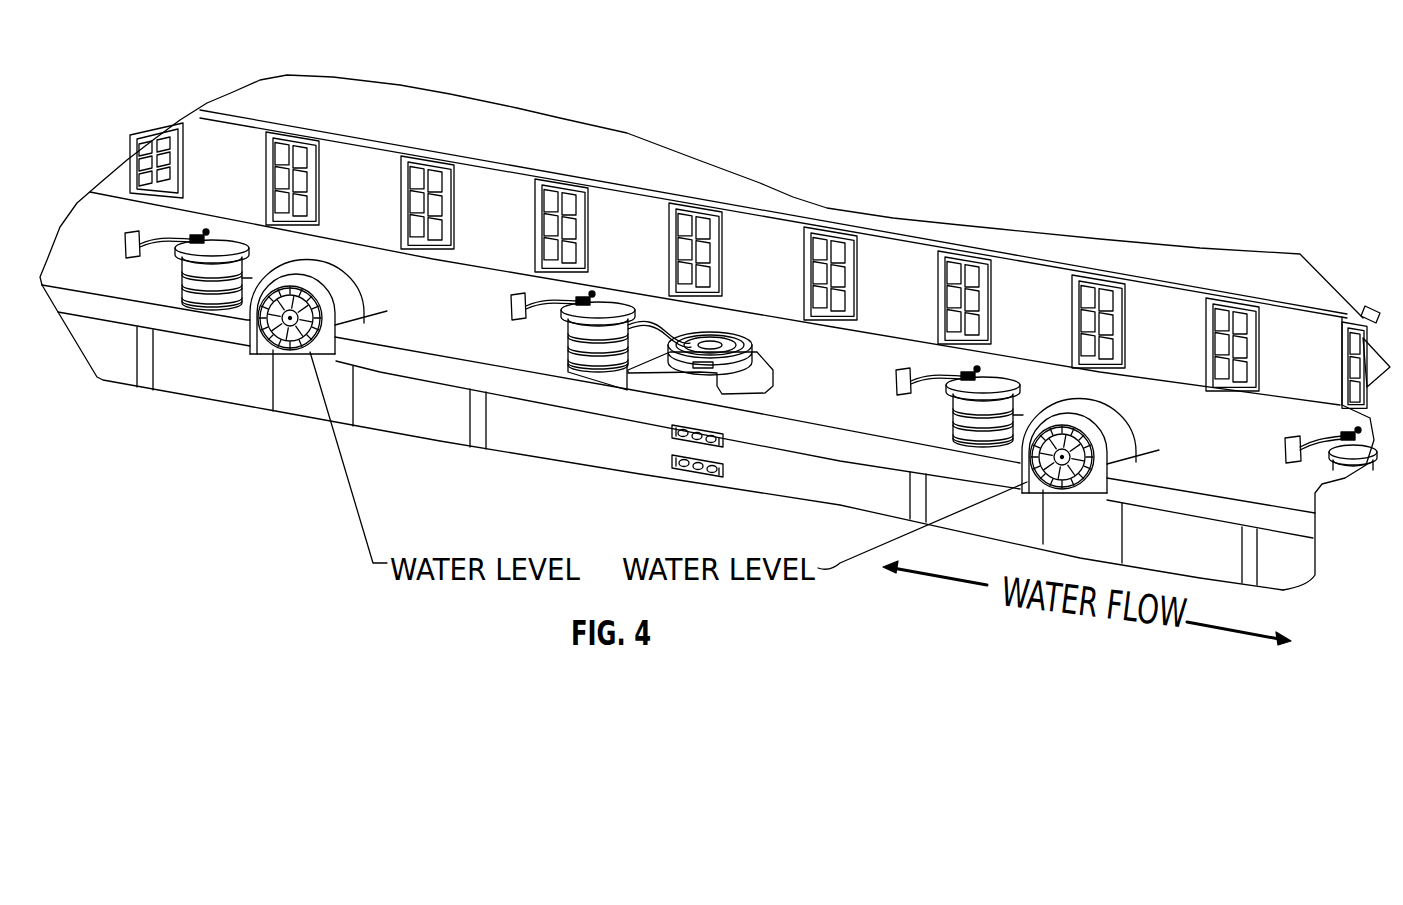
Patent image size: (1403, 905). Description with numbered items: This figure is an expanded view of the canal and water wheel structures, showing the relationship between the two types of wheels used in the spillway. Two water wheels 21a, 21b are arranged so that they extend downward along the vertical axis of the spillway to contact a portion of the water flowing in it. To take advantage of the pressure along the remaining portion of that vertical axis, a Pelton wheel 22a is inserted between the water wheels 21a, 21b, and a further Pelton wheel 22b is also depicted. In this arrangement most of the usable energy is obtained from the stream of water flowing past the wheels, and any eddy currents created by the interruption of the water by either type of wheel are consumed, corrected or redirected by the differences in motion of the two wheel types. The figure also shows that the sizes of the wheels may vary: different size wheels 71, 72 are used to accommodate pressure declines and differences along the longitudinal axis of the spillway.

The water wheel 21a is at (272, 337).
The water wheel 21b is at (1093, 445).
The Pelton wheel 22a is at (673, 442).
The second water intake 22b is at (707, 477).
The wheel 71 is at (182, 279).
The wheel 72 is at (753, 345).